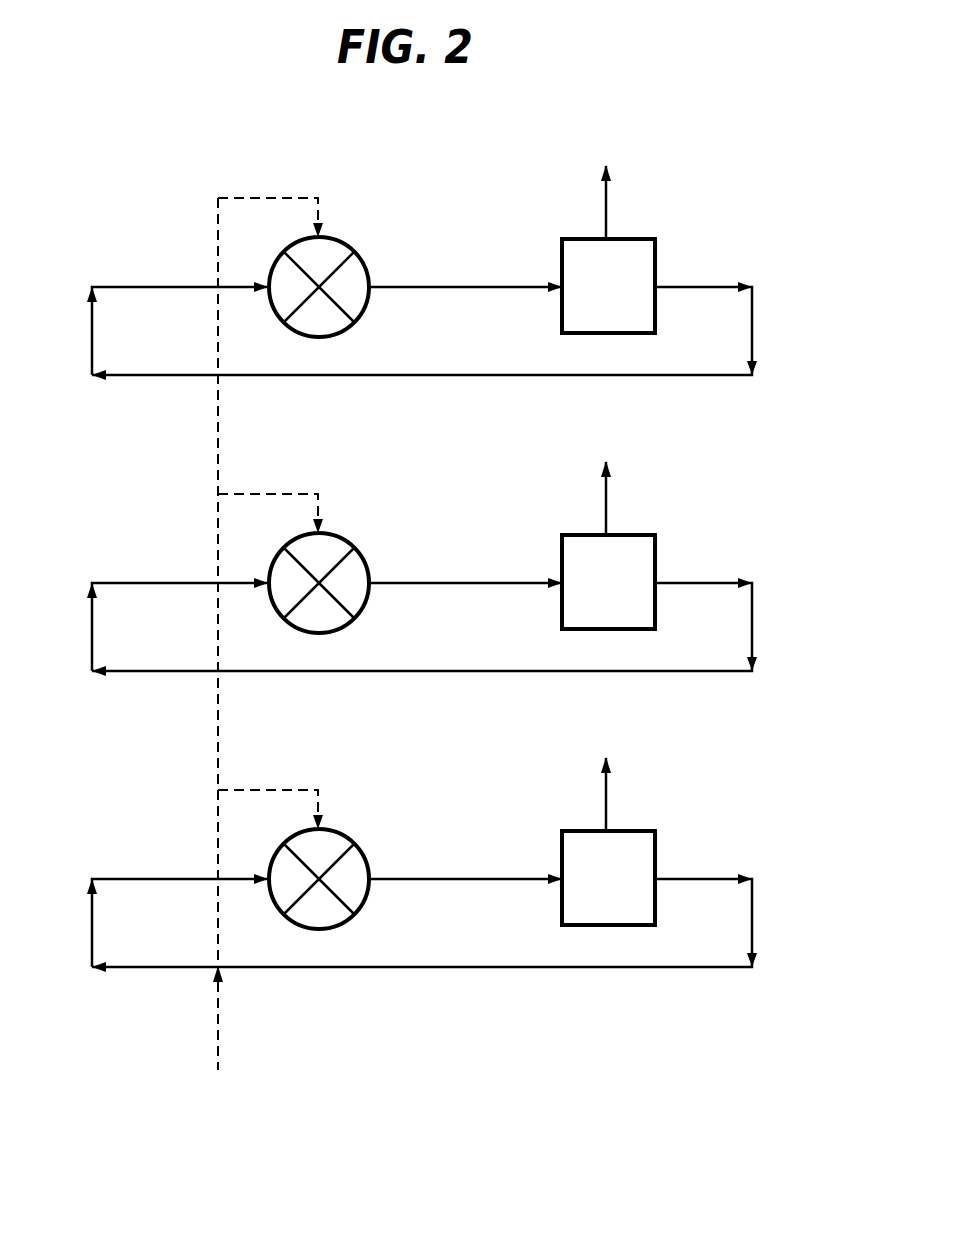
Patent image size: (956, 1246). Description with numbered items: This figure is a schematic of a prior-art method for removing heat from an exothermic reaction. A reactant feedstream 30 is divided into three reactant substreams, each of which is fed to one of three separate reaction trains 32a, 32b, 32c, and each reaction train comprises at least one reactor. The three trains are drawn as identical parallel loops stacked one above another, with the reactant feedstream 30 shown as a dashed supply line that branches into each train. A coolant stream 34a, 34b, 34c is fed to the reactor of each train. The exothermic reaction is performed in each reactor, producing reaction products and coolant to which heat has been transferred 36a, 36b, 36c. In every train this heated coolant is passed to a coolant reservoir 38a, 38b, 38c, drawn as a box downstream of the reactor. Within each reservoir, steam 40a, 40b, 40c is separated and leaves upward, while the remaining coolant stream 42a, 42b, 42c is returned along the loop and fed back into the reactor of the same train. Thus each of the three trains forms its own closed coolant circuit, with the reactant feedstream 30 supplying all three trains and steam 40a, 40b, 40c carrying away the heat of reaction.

The reactant feedstream 30 is at (218, 1020).
The reaction train 32a is at (270, 198).
The reaction train 32b is at (270, 482).
The reaction train 32c is at (270, 778).
The coolant stream 34a is at (136, 287).
The coolant stream 34b is at (177, 595).
The coolant stream 34c is at (177, 891).
The coolant to which heat has been transferred 36a is at (446, 287).
The coolant to which heat has been transferred 36b is at (466, 553).
The coolant to which heat has been transferred 36c is at (466, 849).
The coolant reservoir 38a is at (562, 246).
The coolant reservoir 38b is at (572, 559).
The coolant reservoir 38c is at (572, 855).
The steam 40a is at (606, 187).
The steam 40b is at (606, 483).
The steam 40c is at (606, 779).
The coolant stream 42a is at (714, 287).
The coolant stream 42b is at (424, 597).
The coolant stream 42c is at (424, 893).